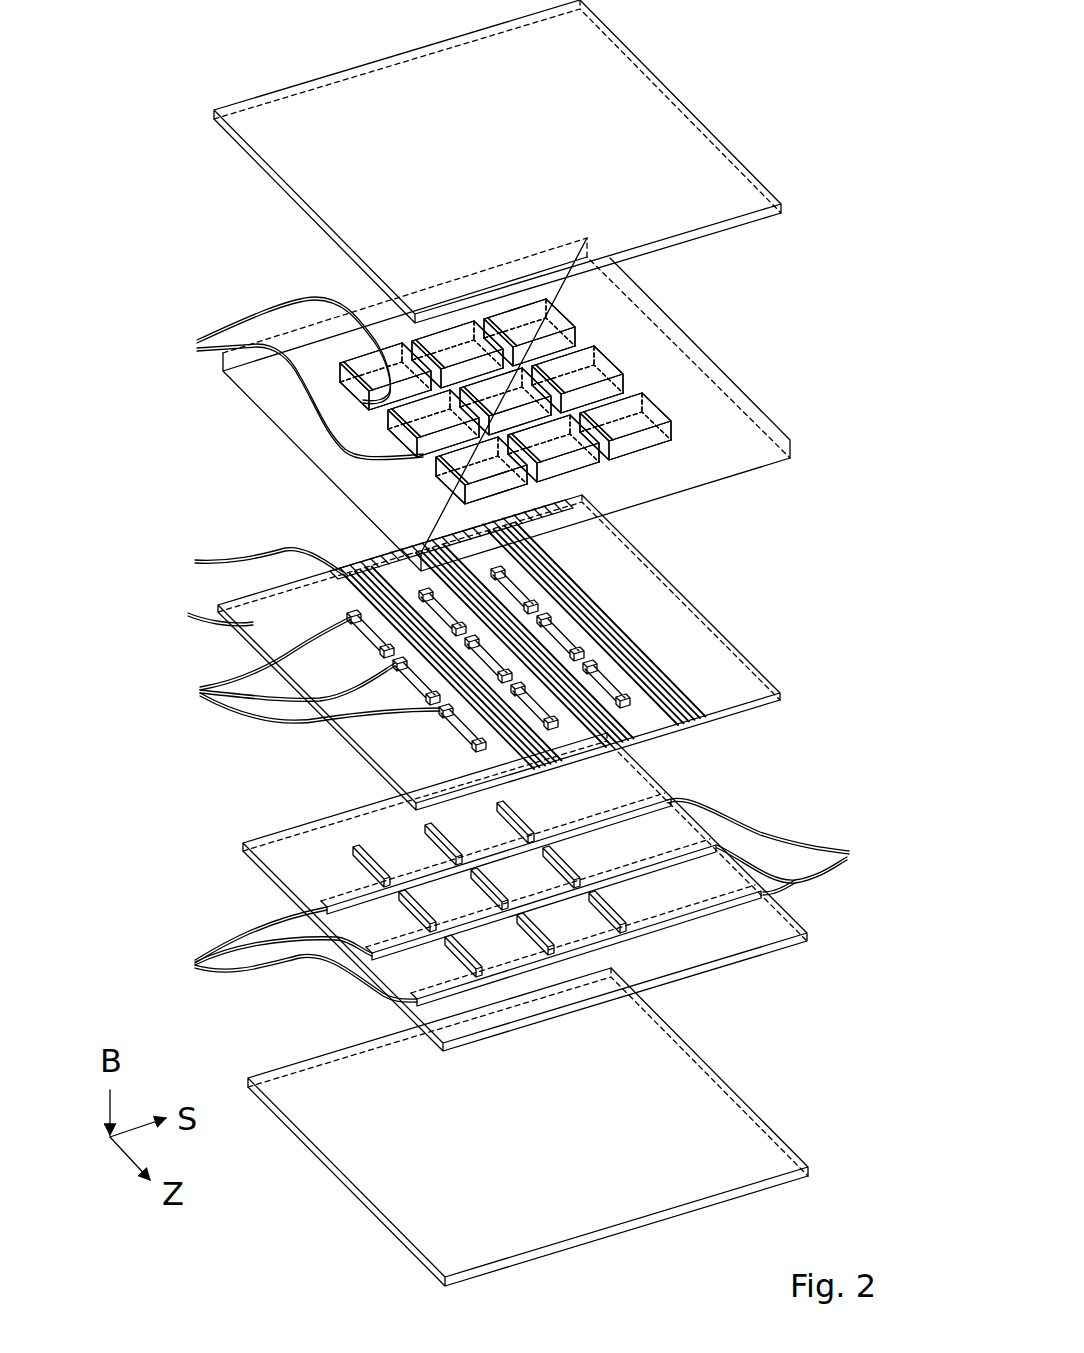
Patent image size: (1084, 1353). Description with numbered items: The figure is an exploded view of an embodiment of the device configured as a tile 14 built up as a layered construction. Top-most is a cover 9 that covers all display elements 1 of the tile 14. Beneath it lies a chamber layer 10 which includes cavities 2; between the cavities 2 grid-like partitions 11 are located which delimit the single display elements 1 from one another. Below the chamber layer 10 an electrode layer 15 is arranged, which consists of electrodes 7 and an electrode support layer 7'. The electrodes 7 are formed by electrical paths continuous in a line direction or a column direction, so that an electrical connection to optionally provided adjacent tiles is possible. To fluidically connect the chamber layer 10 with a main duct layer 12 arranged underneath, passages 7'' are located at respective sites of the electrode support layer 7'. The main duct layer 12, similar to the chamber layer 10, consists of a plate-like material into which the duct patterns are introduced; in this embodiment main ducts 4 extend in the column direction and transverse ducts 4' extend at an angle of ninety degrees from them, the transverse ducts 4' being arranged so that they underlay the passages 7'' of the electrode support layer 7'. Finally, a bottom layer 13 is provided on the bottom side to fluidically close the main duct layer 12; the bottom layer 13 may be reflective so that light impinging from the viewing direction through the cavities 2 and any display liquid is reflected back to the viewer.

The tile 14 is at (811, 61).
The cover 9 is at (781, 216).
The chamber layer 10 is at (532, 404).
The display element 1 is at (584, 320).
The cavity 2 is at (623, 401).
The grid like partition 11 is at (290, 378).
The electrode layer 15 is at (534, 652).
The electrode 7 is at (255, 562).
The electrode support layer 7' is at (210, 607).
The passage 7'' is at (303, 670).
The main duct layer 12 is at (530, 892).
The main duct 4 is at (772, 846).
The transverse duct 4' is at (288, 954).
The bottom layer 13 is at (735, 1100).